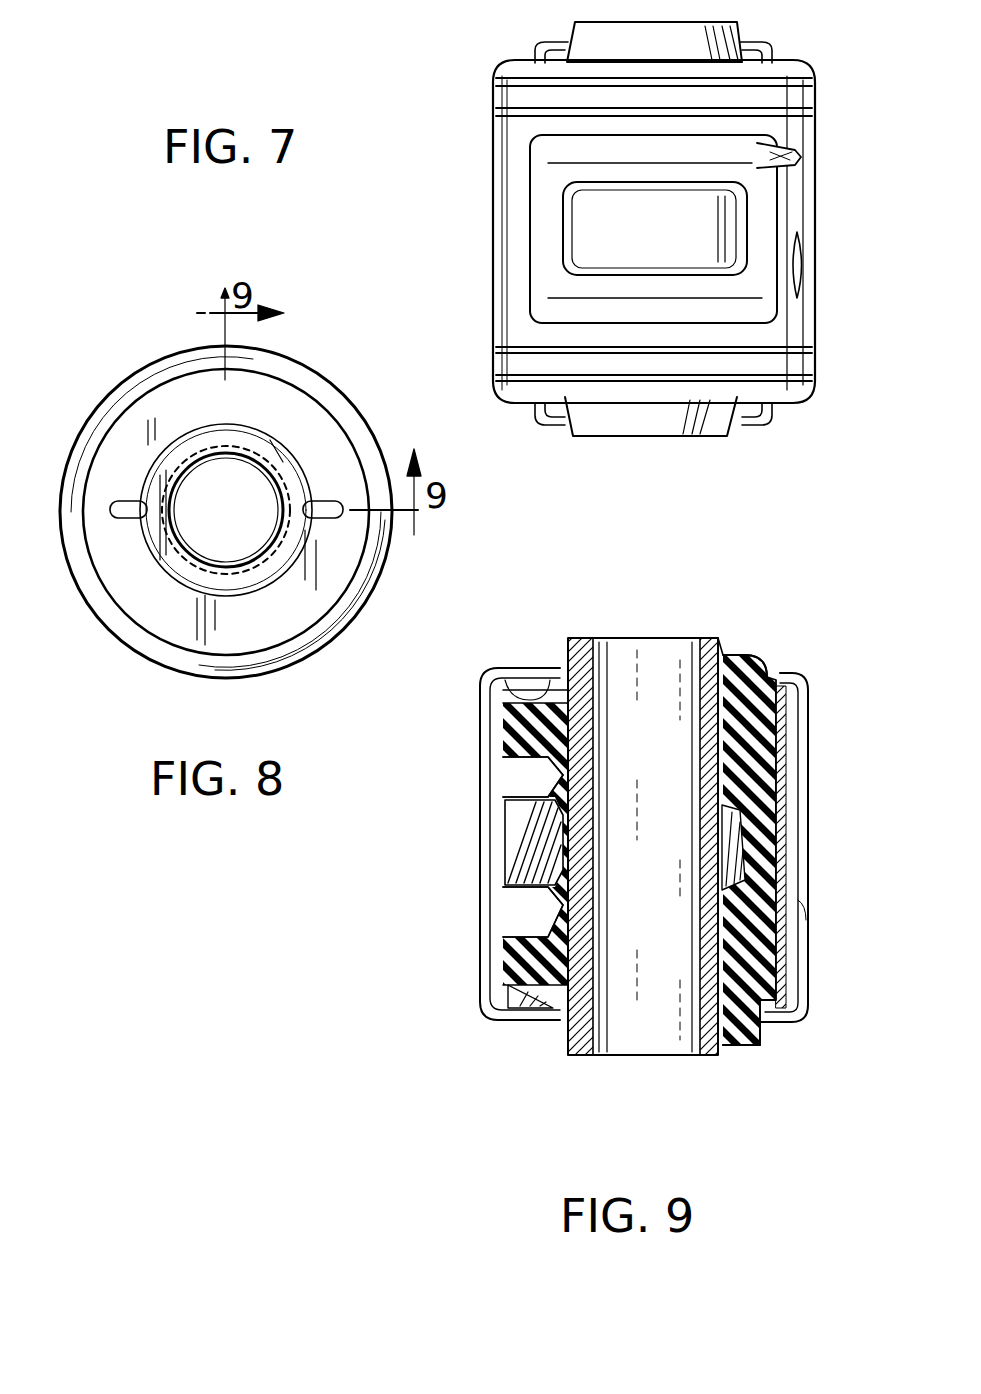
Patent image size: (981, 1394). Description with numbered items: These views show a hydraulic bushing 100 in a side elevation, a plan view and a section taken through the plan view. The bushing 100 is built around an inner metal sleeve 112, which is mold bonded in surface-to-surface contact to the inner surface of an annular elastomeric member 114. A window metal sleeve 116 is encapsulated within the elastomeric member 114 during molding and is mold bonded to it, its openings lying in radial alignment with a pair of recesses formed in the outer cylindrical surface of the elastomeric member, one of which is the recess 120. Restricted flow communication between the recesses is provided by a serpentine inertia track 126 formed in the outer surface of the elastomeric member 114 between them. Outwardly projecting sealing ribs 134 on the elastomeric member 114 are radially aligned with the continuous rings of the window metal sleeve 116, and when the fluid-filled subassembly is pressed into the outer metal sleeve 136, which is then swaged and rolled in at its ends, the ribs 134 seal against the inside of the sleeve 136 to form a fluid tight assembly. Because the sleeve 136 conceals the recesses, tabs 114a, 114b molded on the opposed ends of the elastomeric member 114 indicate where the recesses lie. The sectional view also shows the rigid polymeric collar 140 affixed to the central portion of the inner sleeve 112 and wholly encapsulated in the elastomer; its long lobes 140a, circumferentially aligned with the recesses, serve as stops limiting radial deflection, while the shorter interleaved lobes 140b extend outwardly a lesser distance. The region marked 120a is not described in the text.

In FIG. 7, the bushing 100 is at (830, 63).
In FIG. 9, the inner metal sleeve 112 is at (598, 670).
In FIG. 7, the annular elastomeric member 114 is at (787, 217).
In FIG. 8, the annular elastomeric member 114 is at (318, 437).
In FIG. 9, the annular elastomeric member 114 is at (752, 655).
In FIG. 7, the outwardly projecting tab 114a is at (553, 56).
In FIG. 8, the outwardly projecting tab 114a is at (120, 522).
In FIG. 9, the outwardly projecting tab 114a is at (780, 670).
In FIG. 7, the outwardly projecting tab 114b is at (553, 422).
In FIG. 9, the outwardly projecting tab 114b is at (757, 1034).
In FIG. 9, the window metal sleeve 116 is at (808, 765).
In FIG. 7, the recess 120 is at (542, 312).
In FIG. 9, the side wall portion 120a is at (518, 918).
In FIG. 7, the inertia track 126 is at (803, 157).
In FIG. 7, the sealing rib 134 is at (812, 86).
In FIG. 7, the outer metal sleeve 136 is at (805, 258).
In FIG. 8, the outer metal sleeve 136 is at (287, 358).
In FIG. 9, the outer metal sleeve 136 is at (808, 912).
In FIG. 9, the collar 140 is at (527, 862).
In FIG. 9, the lobe 140a is at (505, 840).
In FIG. 9, the lobe 140b is at (788, 842).